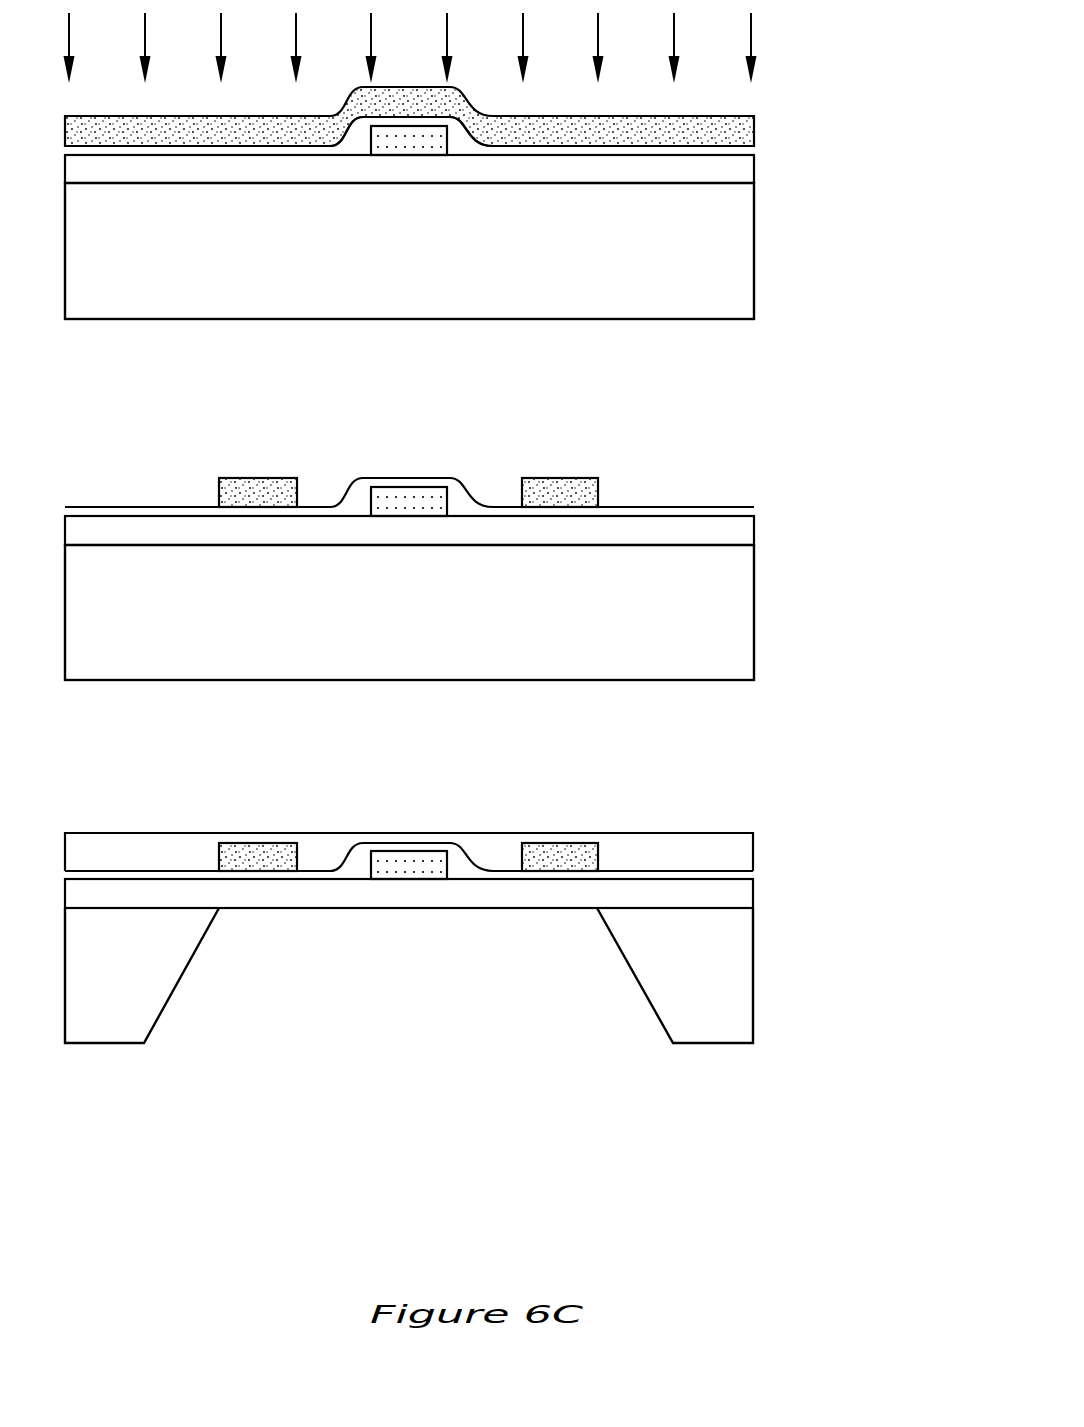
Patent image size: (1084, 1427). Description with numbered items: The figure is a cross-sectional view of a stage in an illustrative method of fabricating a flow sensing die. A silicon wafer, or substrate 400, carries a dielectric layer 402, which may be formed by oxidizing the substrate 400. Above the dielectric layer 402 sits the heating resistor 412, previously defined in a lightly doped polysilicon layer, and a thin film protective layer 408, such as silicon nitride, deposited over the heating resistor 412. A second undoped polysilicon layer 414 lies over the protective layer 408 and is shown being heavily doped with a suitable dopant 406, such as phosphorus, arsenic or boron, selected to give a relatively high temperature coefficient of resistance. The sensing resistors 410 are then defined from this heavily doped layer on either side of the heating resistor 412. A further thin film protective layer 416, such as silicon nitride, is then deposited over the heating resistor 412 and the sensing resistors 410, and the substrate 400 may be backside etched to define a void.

The substrate 400 is at (748, 248).
The dielectric layer 402 is at (748, 165).
The dopant 406 is at (752, 22).
The thin film protective layer 408 is at (732, 148).
The sensing resistors 410 is at (258, 478).
The heating resistor 412 is at (421, 126).
The second undoped polysilicon layer 414 is at (603, 130).
The thin film protective layer 416 is at (682, 838).